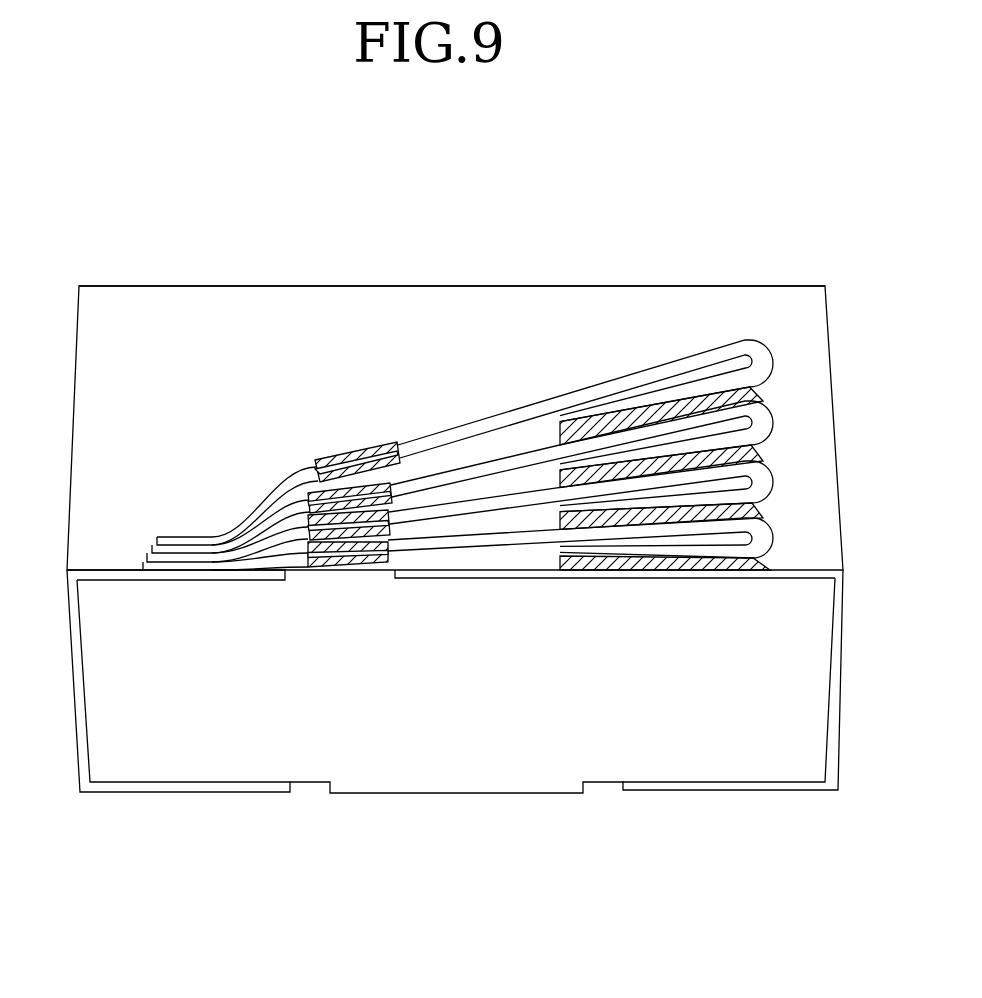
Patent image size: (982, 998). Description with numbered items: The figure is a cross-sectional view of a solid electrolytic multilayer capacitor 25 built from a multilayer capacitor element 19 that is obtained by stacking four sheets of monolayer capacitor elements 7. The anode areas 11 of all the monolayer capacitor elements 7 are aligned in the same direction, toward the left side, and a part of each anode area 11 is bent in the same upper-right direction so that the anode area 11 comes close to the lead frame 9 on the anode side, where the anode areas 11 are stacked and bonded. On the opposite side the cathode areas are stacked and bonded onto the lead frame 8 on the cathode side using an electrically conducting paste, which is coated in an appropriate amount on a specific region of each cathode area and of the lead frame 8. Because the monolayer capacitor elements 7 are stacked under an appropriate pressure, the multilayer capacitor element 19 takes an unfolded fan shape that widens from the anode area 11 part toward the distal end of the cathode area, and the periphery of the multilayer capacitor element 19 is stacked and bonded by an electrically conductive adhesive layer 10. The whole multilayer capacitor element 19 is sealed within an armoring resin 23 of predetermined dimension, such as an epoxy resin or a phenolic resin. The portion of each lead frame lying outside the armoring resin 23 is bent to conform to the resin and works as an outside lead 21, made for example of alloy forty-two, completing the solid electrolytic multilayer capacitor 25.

The monolayer capacitor element 7 is at (775, 349).
The lead frame on the cathode side 8 is at (743, 579).
The lead frame on the anode side 9 is at (120, 581).
The electrically conductive adhesive layer 10 is at (598, 562).
The anode area 11 is at (178, 536).
The multilayer capacitor element 19 is at (647, 367).
The outside lead 21 is at (138, 793).
The armoring resin 23 is at (462, 318).
The solid electrolytic multilayer capacitor 25 is at (200, 286).